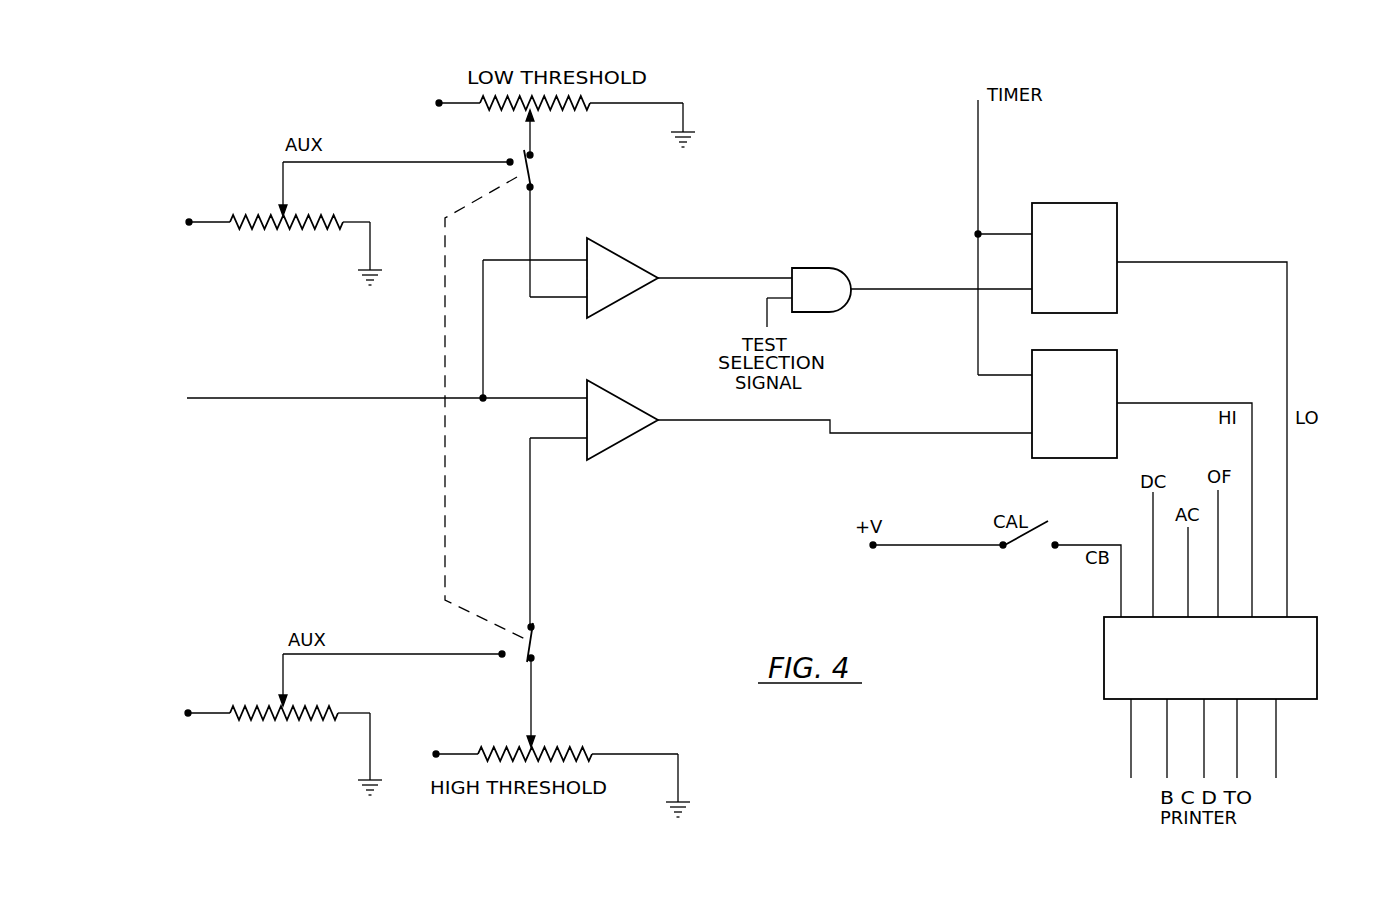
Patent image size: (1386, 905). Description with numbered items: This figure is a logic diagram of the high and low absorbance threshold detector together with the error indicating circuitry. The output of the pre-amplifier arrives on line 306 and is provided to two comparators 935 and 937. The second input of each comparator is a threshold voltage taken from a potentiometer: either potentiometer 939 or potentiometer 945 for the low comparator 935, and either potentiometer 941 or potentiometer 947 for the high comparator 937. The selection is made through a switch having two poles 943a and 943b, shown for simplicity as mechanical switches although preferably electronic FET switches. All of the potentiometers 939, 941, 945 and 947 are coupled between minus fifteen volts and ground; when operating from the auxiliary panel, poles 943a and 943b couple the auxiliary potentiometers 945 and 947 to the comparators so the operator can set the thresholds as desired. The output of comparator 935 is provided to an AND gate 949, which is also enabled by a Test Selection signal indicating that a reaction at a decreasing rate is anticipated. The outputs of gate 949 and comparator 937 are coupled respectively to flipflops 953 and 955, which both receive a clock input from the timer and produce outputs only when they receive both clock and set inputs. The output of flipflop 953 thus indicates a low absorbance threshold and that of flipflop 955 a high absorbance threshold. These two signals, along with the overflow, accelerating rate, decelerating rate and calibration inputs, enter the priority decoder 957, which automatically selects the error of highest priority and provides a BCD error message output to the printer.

The line 306 is at (387, 330).
The comparator 935 is at (632, 262).
The comparator 937 is at (640, 410).
The potentiometer 939 is at (589, 108).
The potentiometer 941 is at (572, 748).
The switch pole 943a is at (533, 166).
The switch pole 943b is at (534, 636).
The potentiometer 945 is at (328, 216).
The potentiometer 947 is at (260, 706).
The AND gate 949 is at (838, 268).
The flipflop 953 is at (1117, 215).
The flipflop 955 is at (1117, 362).
The priority decoder 957 is at (1300, 624).